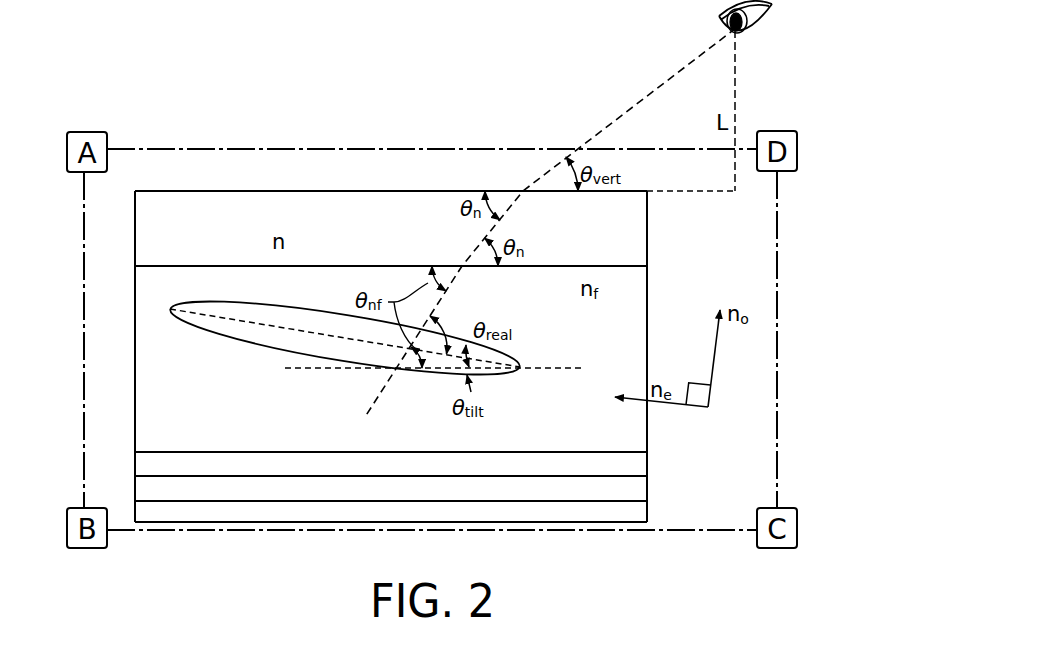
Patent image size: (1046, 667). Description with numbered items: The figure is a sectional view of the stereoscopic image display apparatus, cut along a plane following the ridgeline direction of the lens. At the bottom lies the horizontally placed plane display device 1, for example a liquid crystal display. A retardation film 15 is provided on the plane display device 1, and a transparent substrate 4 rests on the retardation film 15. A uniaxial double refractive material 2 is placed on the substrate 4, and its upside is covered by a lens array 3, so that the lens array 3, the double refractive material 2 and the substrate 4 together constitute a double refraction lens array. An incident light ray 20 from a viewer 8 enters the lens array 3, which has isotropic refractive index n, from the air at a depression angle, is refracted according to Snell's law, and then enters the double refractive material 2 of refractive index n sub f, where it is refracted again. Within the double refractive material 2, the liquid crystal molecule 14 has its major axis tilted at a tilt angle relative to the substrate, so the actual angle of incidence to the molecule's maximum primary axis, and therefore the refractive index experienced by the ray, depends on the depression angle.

The plane display device 1 is at (622, 510).
The uniaxial double refractive material 2 is at (622, 313).
The lens array 3 is at (327, 215).
The transparent substrate 4 is at (622, 462).
The viewer 8 is at (762, 12).
The liquid crystal molecule 14 is at (273, 337).
The retardation film 15 is at (622, 487).
The incident light ray 20 is at (660, 85).